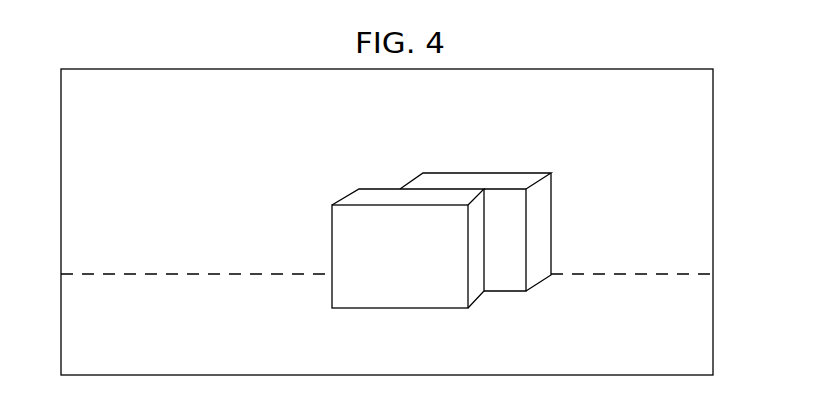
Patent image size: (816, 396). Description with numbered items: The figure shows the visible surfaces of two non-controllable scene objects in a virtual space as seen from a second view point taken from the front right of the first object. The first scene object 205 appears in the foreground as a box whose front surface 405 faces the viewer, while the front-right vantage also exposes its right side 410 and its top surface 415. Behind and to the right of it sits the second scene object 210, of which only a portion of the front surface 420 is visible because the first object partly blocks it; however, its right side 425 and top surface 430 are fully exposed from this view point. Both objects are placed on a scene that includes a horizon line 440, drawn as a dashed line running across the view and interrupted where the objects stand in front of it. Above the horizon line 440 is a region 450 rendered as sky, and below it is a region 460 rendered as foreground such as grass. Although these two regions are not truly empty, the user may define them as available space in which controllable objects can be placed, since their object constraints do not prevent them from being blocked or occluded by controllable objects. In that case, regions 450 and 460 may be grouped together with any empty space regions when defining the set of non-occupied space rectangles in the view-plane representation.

The scene object 1 205 is at (386, 252).
The scene object 2 210 is at (520, 236).
The front surface 405 is at (390, 288).
The right side 410 is at (476, 285).
The top surface 415 is at (378, 198).
The front surface 420 is at (506, 274).
The right side 425 is at (543, 231).
The top surface 430 is at (480, 180).
The horizon line 440 is at (152, 274).
The region 450 is at (124, 154).
The region 460 is at (119, 304).